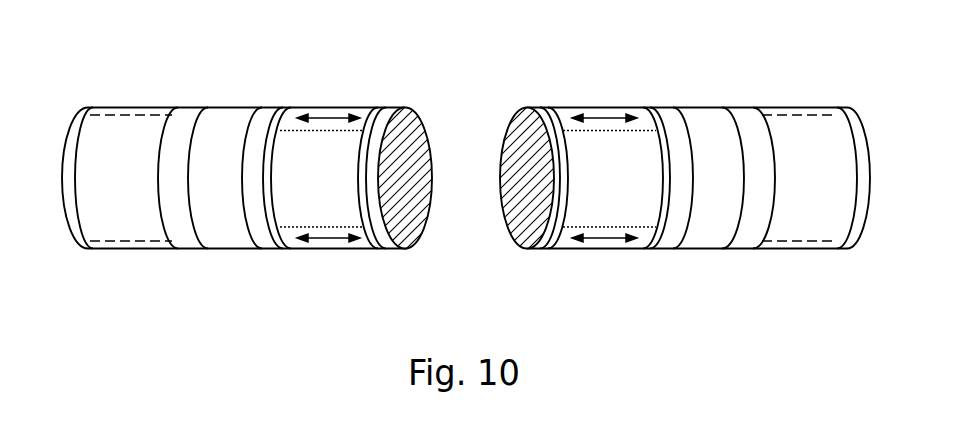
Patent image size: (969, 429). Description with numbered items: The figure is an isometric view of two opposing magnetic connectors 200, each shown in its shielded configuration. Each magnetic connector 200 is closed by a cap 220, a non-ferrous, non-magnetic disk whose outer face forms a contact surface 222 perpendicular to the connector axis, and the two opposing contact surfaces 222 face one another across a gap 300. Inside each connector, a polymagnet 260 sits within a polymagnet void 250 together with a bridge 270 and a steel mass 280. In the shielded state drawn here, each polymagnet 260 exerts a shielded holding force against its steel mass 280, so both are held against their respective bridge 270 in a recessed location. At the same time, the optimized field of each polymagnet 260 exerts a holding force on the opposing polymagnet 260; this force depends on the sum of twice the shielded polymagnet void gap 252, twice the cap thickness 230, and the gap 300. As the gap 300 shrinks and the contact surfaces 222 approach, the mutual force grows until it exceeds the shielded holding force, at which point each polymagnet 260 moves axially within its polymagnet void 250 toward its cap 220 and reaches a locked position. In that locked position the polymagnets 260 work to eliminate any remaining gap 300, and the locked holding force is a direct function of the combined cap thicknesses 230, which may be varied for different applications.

The magnetic connector 200 is at (622, 183).
The cap 220 is at (392, 107).
The contact surface 222 is at (518, 142).
The cap thickness 230 is at (552, 107).
The polymagnet void 250 is at (609, 145).
The shielded polymagnet void gap 252 is at (593, 115).
The polymagnet 260 is at (662, 246).
The bridge 270 is at (700, 112).
The steel mass 280 is at (737, 246).
The gap 300 is at (405, 253).